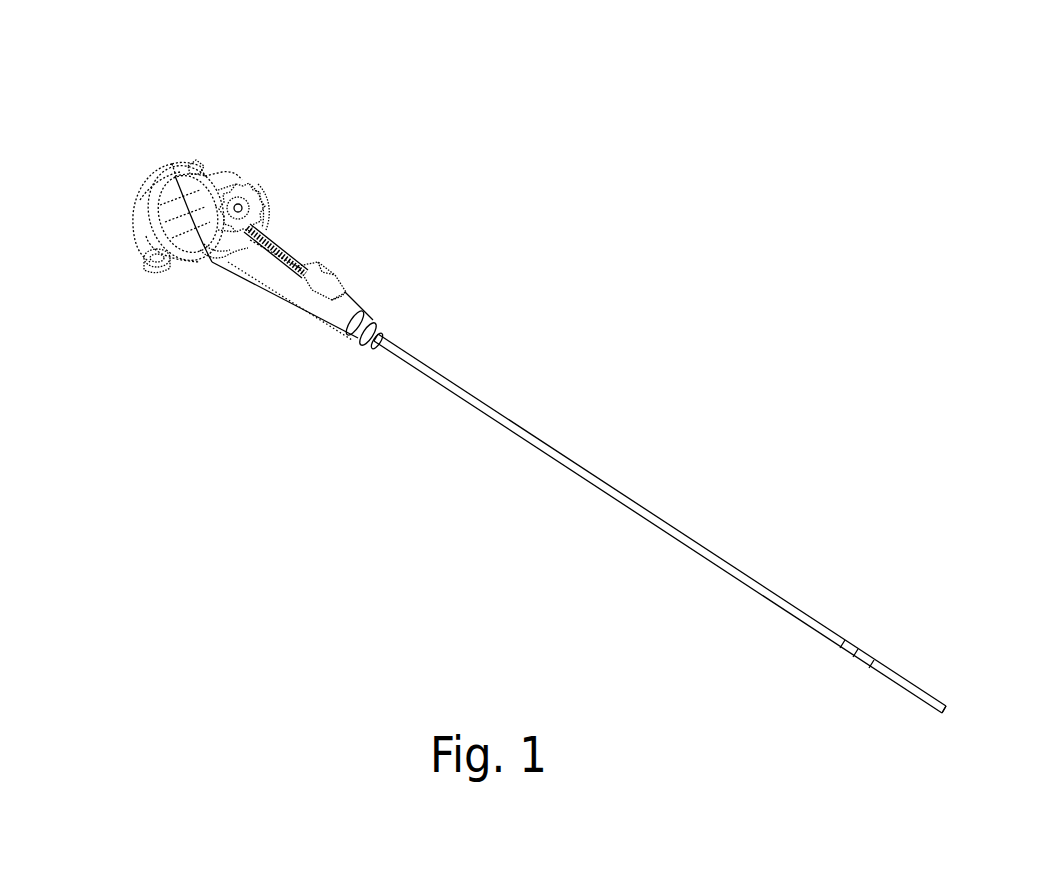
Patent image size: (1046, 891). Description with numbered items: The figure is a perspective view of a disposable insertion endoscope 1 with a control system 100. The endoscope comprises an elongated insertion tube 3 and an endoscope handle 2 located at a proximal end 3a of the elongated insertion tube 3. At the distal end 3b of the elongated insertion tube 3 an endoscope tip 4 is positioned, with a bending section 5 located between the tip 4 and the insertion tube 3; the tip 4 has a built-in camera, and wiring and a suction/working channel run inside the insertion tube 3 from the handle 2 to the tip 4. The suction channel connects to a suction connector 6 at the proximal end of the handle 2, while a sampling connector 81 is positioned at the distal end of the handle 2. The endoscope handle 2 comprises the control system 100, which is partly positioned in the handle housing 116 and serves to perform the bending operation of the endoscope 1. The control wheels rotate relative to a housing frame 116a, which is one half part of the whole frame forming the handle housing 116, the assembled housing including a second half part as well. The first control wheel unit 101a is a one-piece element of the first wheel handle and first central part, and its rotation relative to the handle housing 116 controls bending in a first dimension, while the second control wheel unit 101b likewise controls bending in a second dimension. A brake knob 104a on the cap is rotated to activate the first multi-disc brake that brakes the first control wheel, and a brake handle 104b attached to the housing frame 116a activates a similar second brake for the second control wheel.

The disposable insertion endoscope 1 is at (747, 220).
The endoscope handle 2 is at (352, 180).
The elongated insertion tube 3 is at (677, 526).
The proximal end 3a is at (392, 355).
The distal end 3b is at (845, 634).
The endoscope tip 4 is at (926, 690).
The bending section 5 is at (899, 680).
The suction connector 6 is at (150, 272).
The sampling connector 81 is at (336, 276).
The control system 100 is at (215, 128).
The first control wheel unit 101a is at (228, 162).
The second control wheel unit 101b is at (208, 258).
The brake knob 104a is at (251, 175).
The brake handle 104b is at (197, 167).
The handle housing 116 is at (160, 170).
The housing frame 116a is at (275, 272).